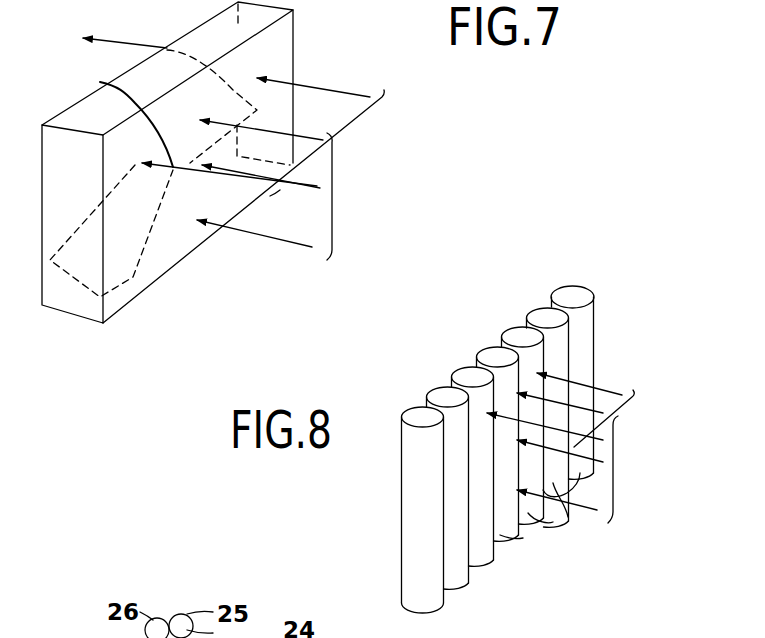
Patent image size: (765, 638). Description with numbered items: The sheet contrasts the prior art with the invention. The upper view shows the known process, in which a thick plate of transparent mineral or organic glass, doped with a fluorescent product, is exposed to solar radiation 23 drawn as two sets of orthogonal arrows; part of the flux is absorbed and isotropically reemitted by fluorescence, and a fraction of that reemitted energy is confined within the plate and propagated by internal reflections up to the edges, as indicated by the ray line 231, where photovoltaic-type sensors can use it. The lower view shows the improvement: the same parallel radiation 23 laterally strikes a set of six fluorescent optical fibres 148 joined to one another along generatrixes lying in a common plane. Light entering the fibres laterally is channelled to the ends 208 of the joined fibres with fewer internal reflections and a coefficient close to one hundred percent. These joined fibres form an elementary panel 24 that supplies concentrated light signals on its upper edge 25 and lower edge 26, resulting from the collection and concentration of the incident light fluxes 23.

In FIG. 7, the solar radiation 23 is at (347, 132).
In FIG. 8, the solar radiation 23 is at (628, 402).
In FIG. 7, the ray line 231 is at (100, 82).
In FIG. 8, the ends of the joined fibres 208 is at (525, 325).
In FIG. 8, the upper edge 25 is at (446, 382).
In FIG. 8, the elementary panel 24 is at (480, 483).
In FIG. 8, the lower edge 26 is at (470, 591).
In FIG. 8, the fluorescent optical fibres 148 is at (543, 521).